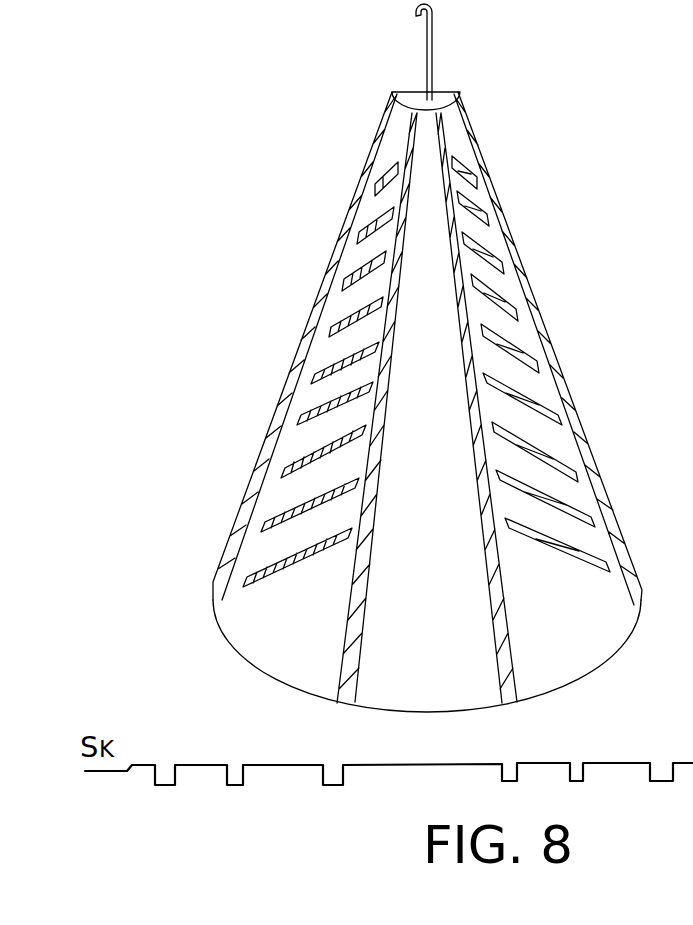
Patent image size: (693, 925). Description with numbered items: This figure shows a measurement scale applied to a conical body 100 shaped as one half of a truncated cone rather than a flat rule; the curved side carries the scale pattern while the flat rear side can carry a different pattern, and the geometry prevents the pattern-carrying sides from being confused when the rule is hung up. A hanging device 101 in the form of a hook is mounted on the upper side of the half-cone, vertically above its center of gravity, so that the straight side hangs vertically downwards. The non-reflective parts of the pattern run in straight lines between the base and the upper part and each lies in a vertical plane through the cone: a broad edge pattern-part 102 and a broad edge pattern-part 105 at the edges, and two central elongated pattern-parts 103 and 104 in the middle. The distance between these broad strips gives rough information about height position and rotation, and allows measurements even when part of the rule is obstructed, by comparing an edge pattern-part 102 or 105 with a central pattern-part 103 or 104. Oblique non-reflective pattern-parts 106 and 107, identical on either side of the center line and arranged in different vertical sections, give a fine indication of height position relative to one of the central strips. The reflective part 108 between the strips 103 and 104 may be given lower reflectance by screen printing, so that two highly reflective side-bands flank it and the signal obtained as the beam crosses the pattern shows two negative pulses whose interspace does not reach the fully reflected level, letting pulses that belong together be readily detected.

The conical body 100 is at (445, 423).
The hanging device 101 is at (434, 35).
The edge pattern-part 102 is at (289, 395).
The central elongated pattern-part 103 is at (390, 388).
The central elongated pattern-part 104 is at (480, 503).
The edge pattern-part 105 is at (573, 399).
The oblique non-reflective pattern-parts 106 is at (362, 268).
The oblique non-reflective pattern-parts 107 is at (497, 298).
The reflective part 108 is at (436, 714).